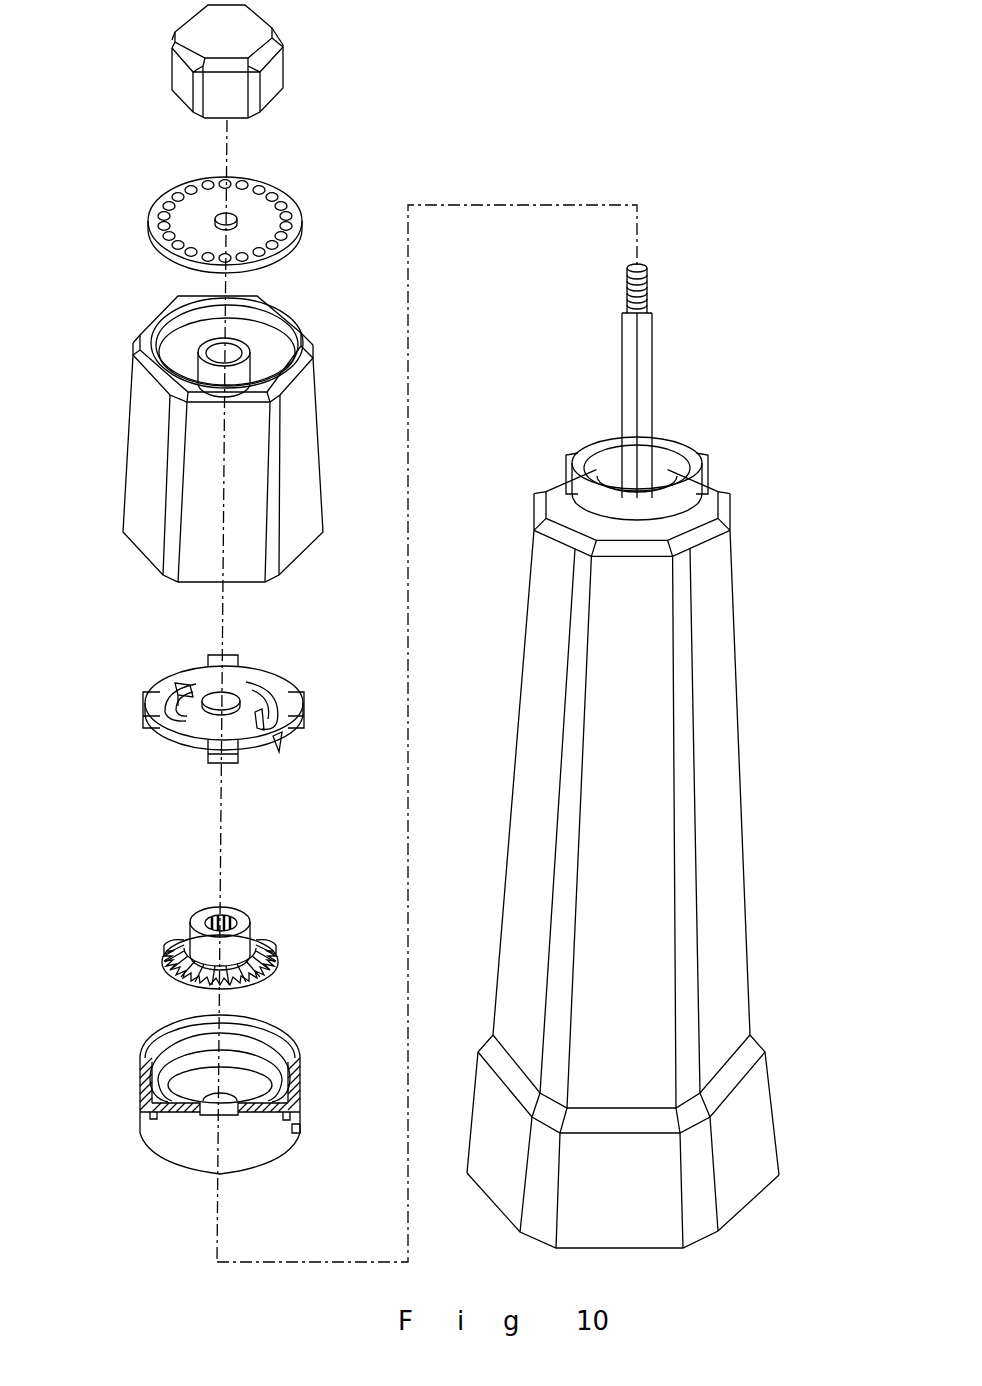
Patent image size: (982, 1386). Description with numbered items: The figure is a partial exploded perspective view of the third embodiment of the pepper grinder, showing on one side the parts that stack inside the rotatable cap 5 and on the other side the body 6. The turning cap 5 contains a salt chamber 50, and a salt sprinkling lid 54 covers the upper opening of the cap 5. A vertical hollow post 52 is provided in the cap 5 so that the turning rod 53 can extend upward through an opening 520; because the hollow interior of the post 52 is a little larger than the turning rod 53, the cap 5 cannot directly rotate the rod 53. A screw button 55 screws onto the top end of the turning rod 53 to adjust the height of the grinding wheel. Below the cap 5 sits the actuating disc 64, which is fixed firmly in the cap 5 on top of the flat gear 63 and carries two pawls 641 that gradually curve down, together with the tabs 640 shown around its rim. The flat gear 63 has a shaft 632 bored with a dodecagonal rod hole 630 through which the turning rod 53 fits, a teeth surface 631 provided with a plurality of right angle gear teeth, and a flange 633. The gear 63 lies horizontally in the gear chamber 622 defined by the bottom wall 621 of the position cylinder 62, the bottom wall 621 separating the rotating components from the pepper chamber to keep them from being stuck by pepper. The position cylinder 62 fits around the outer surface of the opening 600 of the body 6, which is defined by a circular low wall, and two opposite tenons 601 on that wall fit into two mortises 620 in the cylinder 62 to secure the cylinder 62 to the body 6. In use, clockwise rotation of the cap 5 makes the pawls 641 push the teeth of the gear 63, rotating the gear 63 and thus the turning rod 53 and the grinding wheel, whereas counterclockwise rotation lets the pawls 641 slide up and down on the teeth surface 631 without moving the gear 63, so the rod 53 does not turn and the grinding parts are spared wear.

The screw button 55 is at (285, 62).
The salt sprinkling lid 54 is at (263, 212).
The opening 520 is at (230, 352).
The vertical hollow post 52 is at (250, 360).
The salt chamber 50 is at (268, 366).
The rotatable cap 5 is at (253, 413).
The tabs 640 is at (230, 658).
The actuating disc 64 is at (237, 714).
The pawls 641 is at (182, 710).
The shaft 632 is at (198, 923).
The dodecagonal rod hole 630 is at (232, 915).
The flat gear 63 is at (243, 931).
The teeth surface 631 is at (254, 964).
The gear flange 633 is at (264, 984).
The gear chamber 622 is at (167, 1064).
The bottom wall 621 is at (232, 1084).
The position cylinder 62 is at (247, 1097).
The mortises 620 is at (287, 1133).
The turning rod 53 is at (645, 343).
The opening 600 is at (612, 463).
The tenons 601 is at (698, 470).
The body 6 is at (639, 802).